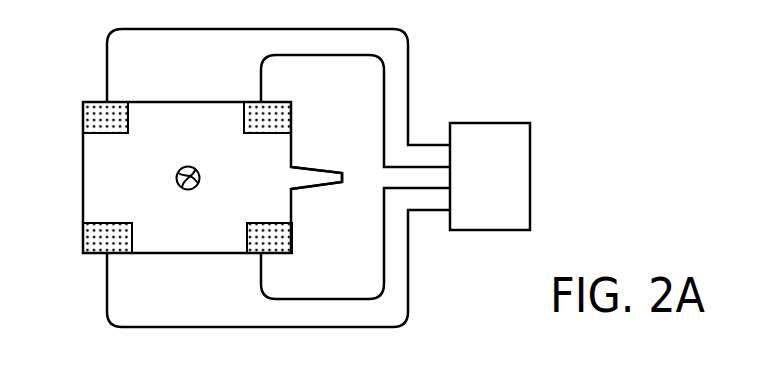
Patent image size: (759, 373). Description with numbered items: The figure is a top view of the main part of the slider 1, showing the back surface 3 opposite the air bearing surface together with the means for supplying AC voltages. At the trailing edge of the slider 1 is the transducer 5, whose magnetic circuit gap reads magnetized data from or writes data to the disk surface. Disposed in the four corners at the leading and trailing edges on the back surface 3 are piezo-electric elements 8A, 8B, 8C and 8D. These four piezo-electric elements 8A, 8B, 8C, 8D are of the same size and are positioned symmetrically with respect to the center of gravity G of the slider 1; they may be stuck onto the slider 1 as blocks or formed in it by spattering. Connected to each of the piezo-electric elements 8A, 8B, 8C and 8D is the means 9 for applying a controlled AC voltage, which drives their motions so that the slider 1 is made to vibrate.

The slider 1 is at (118, 181).
The back surface 3 is at (230, 191).
The transducer 5 is at (318, 165).
The piezo-electric element 8A is at (88, 238).
The piezo-electric element 8B is at (88, 122).
The piezo-electric element 8C is at (284, 115).
The piezo-electric element 8D is at (284, 238).
The means for applying a controlled AC voltage 9 is at (492, 190).